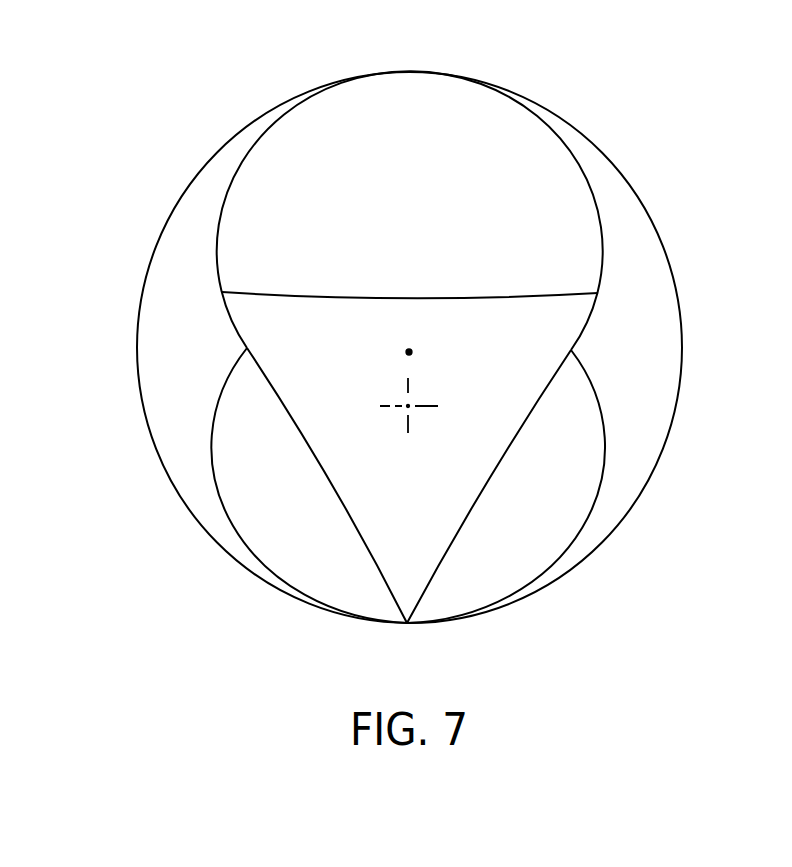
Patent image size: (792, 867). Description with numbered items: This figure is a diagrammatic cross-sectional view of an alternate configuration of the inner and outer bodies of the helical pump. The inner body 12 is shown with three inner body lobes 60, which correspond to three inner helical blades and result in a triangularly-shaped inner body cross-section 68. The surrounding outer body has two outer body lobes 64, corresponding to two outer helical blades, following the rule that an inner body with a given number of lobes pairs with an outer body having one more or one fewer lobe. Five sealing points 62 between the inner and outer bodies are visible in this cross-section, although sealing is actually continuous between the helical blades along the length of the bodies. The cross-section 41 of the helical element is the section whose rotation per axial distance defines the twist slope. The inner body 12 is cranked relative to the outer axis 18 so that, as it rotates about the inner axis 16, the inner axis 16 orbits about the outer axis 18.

The inner body 12 is at (410, 430).
The inner axis 16 is at (410, 405).
The outer axis 18 is at (413, 351).
The cross-section of the helical element 41 is at (353, 313).
The inner body lobes 60 is at (267, 297).
The sealing points 62 is at (227, 295).
The outer body lobes 64 is at (142, 387).
The triangularly-shaped inner body cross-section 68 is at (472, 492).